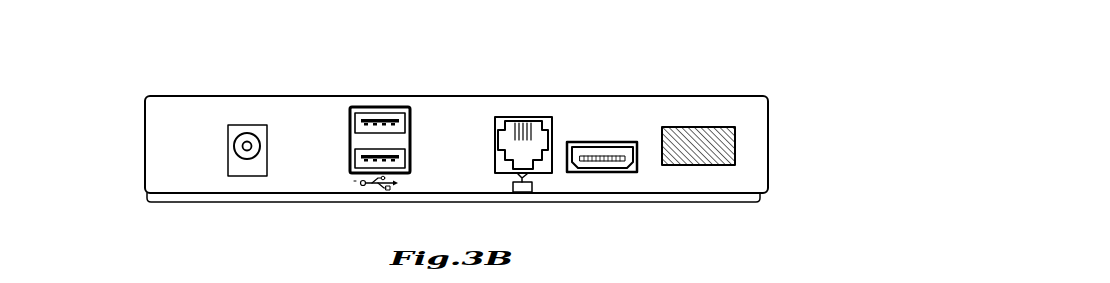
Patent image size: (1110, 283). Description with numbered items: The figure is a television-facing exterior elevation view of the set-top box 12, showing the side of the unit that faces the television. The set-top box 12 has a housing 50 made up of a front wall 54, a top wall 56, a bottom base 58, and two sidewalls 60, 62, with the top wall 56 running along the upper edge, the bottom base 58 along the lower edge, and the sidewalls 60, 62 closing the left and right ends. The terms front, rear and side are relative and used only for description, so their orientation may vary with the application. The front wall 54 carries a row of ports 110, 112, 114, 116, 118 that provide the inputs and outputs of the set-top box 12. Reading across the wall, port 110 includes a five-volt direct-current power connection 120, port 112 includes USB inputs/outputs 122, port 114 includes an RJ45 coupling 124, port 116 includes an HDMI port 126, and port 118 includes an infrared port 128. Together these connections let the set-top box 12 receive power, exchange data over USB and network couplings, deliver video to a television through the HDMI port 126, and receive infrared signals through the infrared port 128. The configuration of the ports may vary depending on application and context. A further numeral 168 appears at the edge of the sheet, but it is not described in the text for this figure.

The set-top box 12 is at (168, 92).
The housing 50 is at (741, 92).
The front wall 54 is at (178, 185).
The top wall 56 is at (213, 95).
The bottom base 58 is at (288, 203).
The sidewall 60 is at (144, 115).
The sidewall 62 is at (768, 143).
The port 110 is at (262, 125).
The port 112 is at (378, 106).
The port 114 is at (525, 119).
The port 116 is at (600, 142).
The port 118 is at (688, 127).
The 5V dc power connection 120 is at (247, 168).
The USB inputs/outputs 122 is at (360, 168).
The RJ45 coupling 124 is at (542, 163).
The HDMI port 126 is at (632, 172).
The infrared port 128 is at (708, 165).
The reference numeral (adjacent figure) 168 is at (775, 278).